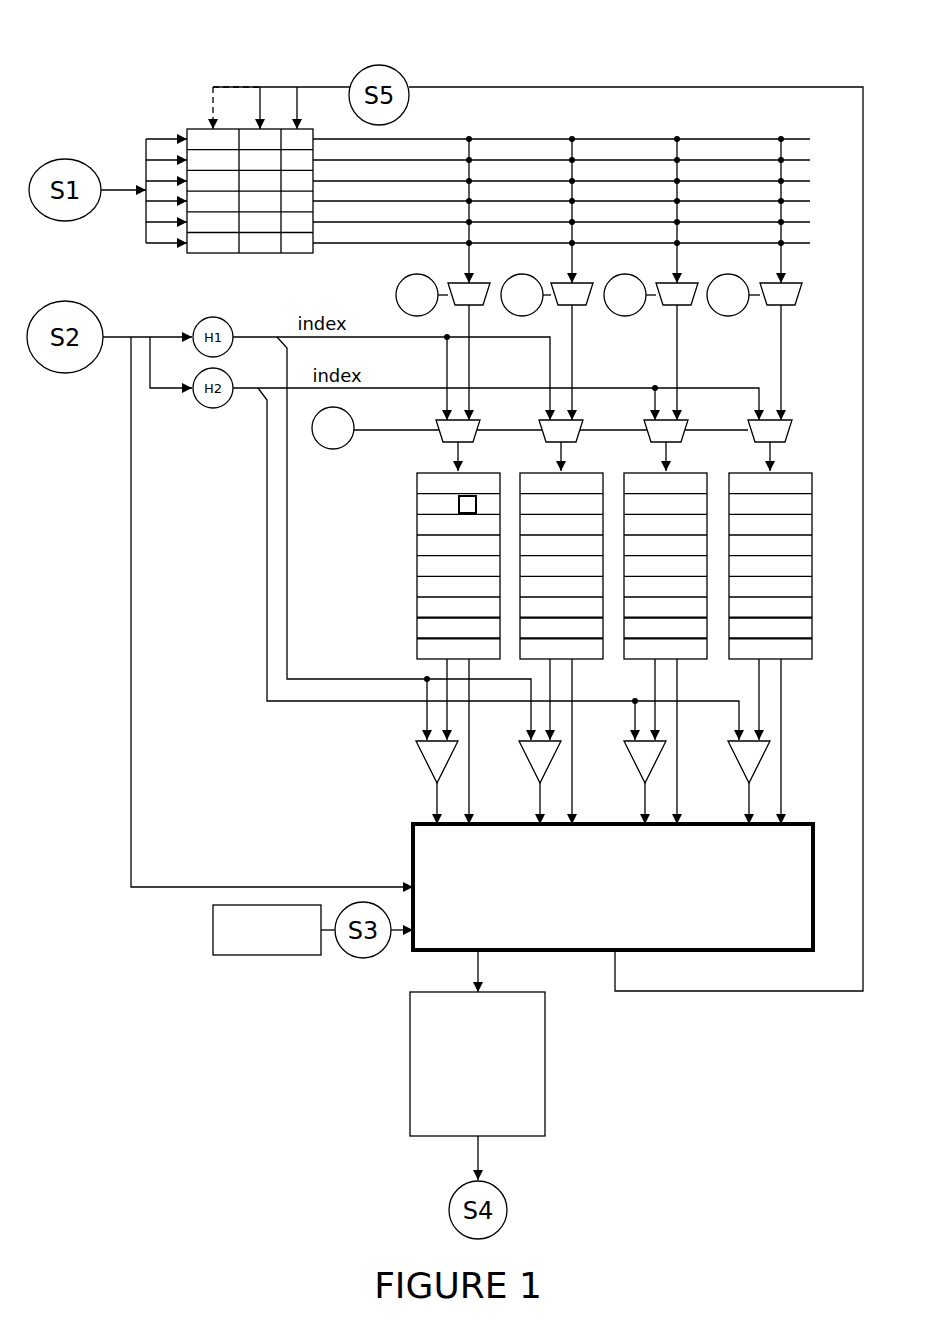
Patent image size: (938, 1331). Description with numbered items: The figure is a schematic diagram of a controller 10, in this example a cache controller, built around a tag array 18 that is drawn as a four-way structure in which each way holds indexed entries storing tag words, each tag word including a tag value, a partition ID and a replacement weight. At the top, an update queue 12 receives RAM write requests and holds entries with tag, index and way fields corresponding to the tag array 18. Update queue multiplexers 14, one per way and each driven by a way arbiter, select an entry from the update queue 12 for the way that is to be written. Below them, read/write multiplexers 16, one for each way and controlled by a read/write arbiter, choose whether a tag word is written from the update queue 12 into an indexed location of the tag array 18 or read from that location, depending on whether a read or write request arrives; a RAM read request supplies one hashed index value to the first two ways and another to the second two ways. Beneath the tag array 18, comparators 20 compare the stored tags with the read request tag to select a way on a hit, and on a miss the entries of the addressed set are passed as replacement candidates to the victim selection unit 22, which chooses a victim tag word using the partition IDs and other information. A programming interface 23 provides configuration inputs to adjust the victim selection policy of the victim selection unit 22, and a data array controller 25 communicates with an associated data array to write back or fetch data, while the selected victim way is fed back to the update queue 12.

The controller 10 is at (781, 59).
The update queue 12 is at (287, 254).
The update queue multiplexers 14 is at (802, 303).
The read/write multiplexers 16 is at (788, 440).
The tag array 18 is at (390, 538).
The comparators 20 is at (426, 765).
The victim selection unit 22 is at (613, 887).
The programming interface 23 is at (245, 957).
The data array controller 25 is at (548, 1135).